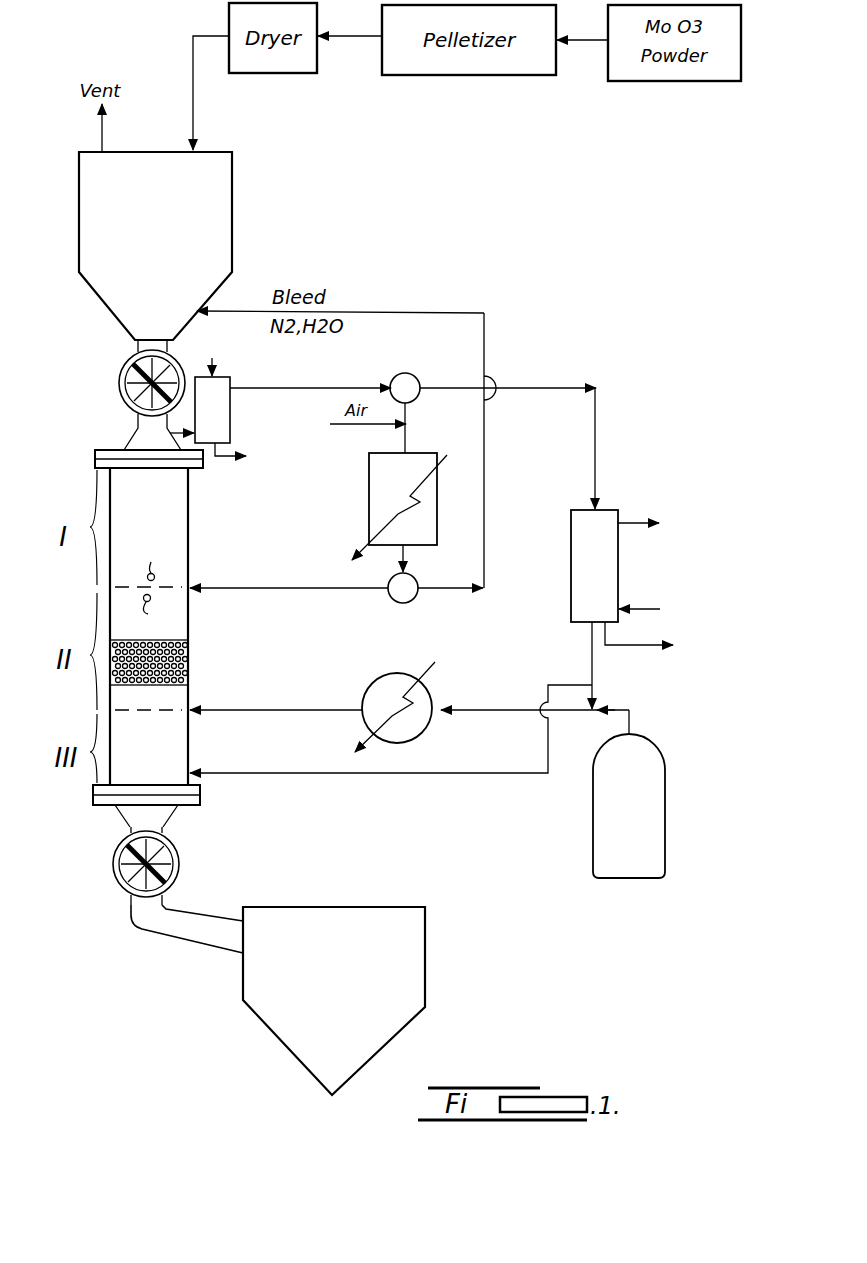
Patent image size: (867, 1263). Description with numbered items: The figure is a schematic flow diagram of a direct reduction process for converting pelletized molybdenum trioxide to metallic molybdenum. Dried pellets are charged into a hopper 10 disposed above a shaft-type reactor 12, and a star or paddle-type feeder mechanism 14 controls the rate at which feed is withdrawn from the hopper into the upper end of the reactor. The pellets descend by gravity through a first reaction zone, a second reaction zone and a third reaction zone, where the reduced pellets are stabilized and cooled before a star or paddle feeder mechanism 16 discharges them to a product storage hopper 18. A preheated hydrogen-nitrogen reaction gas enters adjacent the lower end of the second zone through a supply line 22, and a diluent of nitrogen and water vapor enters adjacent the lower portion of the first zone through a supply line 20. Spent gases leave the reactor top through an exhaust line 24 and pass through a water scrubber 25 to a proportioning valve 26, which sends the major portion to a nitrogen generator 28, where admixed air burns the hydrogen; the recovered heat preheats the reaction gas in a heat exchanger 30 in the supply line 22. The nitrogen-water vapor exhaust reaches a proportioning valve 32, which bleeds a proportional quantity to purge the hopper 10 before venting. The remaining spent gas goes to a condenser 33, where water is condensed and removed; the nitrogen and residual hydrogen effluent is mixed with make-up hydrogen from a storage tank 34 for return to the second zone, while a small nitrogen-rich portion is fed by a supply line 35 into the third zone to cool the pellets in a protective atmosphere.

The hopper 10 is at (232, 207).
The shaft-type reactor 12 is at (190, 512).
The star or paddle-type feeder mechanism 14 is at (120, 376).
The star or paddle feeder mechanism 16 is at (178, 852).
The product storage hopper 18 is at (425, 952).
The supply line 20 is at (249, 590).
The supply line 22 is at (249, 713).
The exhaust line 24 is at (306, 394).
The water scrubber 25 is at (222, 410).
The proportioning valve 26 is at (419, 376).
The nitrogen generator 28 is at (375, 487).
The heat exchanger 30 is at (415, 742).
The proportioning valve 32 is at (397, 602).
The condenser 33 is at (616, 567).
The storage tank 34 is at (660, 838).
The supply line 35 is at (349, 776).